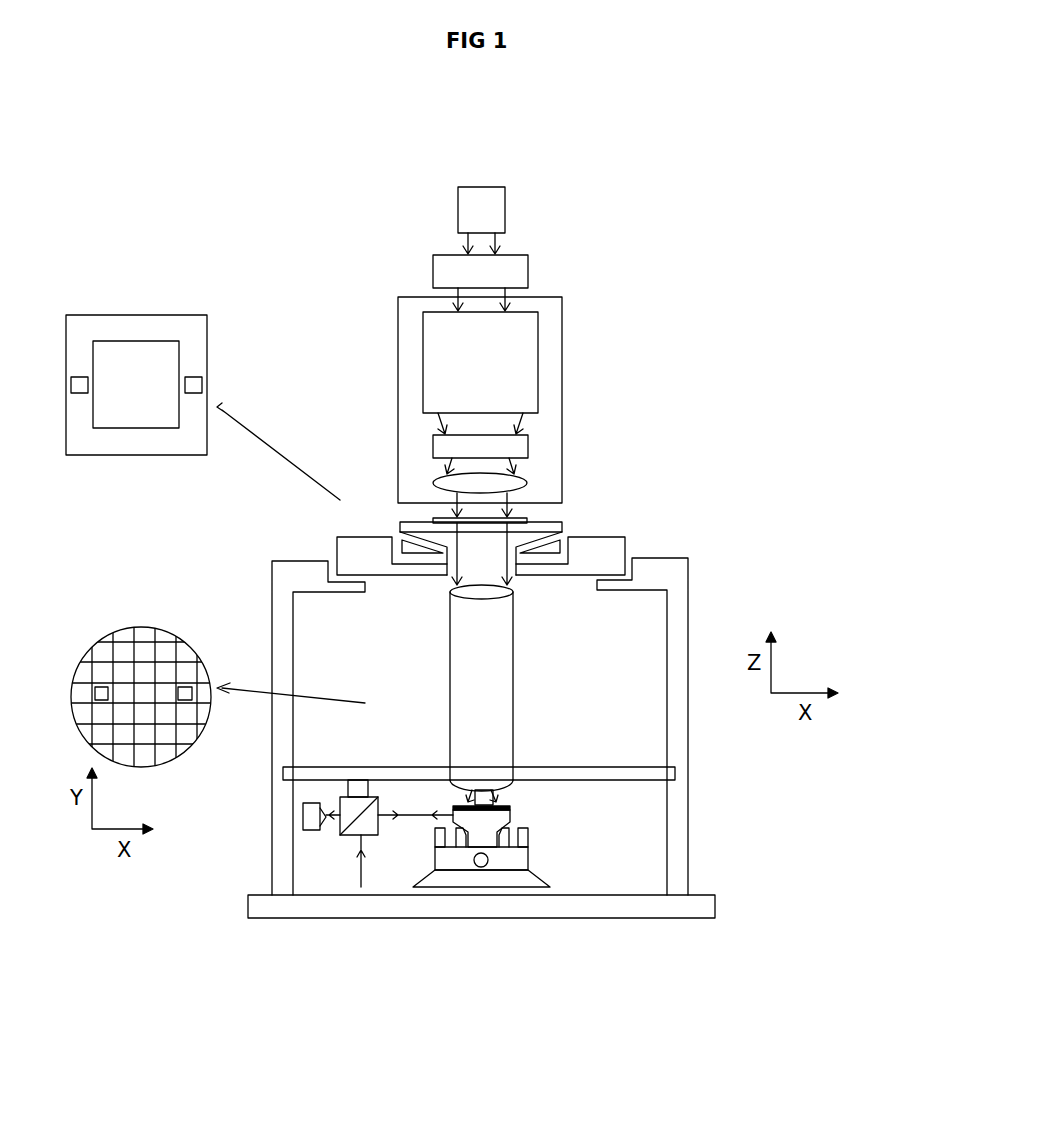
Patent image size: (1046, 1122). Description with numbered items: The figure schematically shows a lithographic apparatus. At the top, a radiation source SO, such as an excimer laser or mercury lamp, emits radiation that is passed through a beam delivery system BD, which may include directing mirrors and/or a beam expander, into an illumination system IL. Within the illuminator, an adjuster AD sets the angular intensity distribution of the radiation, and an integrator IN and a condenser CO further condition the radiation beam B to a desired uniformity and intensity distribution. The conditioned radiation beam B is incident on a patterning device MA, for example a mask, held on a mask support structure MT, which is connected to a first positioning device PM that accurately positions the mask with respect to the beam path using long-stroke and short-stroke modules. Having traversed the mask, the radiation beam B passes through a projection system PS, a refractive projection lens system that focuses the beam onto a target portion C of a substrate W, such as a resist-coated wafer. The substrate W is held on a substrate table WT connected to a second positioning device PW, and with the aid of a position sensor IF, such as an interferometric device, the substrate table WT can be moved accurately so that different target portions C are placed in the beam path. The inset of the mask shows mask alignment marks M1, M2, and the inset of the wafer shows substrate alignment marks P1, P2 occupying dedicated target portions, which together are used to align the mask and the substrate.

The radiation source SO is at (505, 213).
The beam delivery system BD is at (528, 278).
The illumination system IL is at (562, 322).
The adjuster AD is at (538, 370).
The integrator IN is at (528, 443).
The condenser CO is at (523, 480).
The radiation beam B is at (483, 514).
The patterning device MA is at (433, 519).
The mask alignment mark M1 is at (195, 377).
The mask alignment mark M2 is at (78, 377).
The mask support structure MT is at (540, 532).
The first positioning device PM is at (337, 537).
The projection system PS is at (513, 672).
The substrate W is at (285, 695).
The target portion C is at (145, 682).
The substrate alignment mark P1 is at (102, 687).
The substrate alignment mark P2 is at (185, 687).
The substrate table WT is at (510, 815).
The second positioning device PW is at (528, 863).
The position sensor IF is at (333, 847).